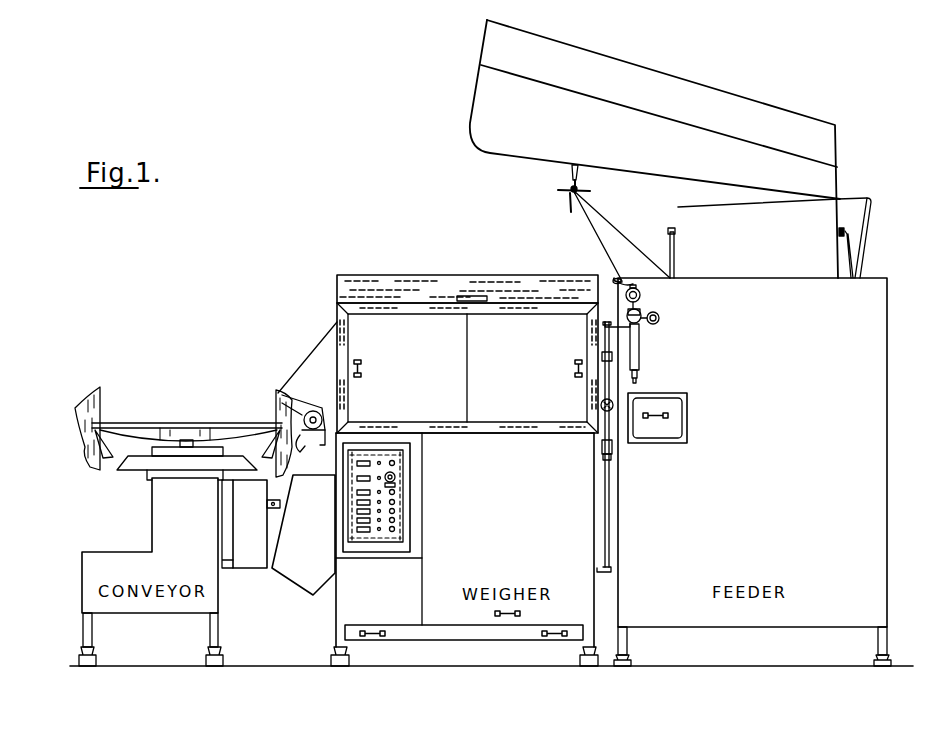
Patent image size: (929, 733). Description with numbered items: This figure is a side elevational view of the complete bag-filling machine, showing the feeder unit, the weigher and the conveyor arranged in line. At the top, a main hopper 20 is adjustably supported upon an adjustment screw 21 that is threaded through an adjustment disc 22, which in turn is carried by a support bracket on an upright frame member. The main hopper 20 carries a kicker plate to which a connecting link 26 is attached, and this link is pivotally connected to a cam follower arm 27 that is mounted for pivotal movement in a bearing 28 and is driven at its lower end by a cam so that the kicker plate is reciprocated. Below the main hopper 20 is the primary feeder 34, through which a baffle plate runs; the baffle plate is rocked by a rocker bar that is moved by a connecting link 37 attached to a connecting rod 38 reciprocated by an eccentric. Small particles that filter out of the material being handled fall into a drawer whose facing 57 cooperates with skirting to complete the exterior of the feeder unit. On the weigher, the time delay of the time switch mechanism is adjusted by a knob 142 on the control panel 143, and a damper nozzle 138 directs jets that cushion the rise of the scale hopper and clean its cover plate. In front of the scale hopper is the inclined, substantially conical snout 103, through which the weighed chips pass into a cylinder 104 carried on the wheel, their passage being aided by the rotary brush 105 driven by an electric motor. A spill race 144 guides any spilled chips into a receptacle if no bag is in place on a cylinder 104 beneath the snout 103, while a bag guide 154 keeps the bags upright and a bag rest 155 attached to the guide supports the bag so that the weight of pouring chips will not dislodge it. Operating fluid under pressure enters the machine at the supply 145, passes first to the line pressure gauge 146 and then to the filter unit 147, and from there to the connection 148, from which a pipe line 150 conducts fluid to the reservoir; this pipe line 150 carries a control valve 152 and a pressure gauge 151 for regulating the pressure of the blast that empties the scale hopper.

The main hopper 20 is at (517, 145).
The adjustment screw 21 is at (582, 189).
The adjustment disc 22 is at (561, 191).
The connecting link 26 is at (852, 200).
The cam follower arm 27 is at (866, 228).
The bearing 28 is at (597, 234).
The primary feeder 34 is at (688, 221).
The connecting link 37 is at (840, 230).
The connecting rod 38 is at (848, 258).
The facing 57 is at (680, 423).
The inclined snout 103 is at (312, 357).
The cylinder 104 is at (97, 412).
The rotary brush 105 is at (326, 399).
The damper nozzle 138 is at (334, 443).
The knob 142 is at (396, 476).
The control panel 143 is at (408, 512).
The spill race 144 is at (291, 571).
The operating fluid supply 145 is at (616, 280).
The line pressure gauge 146 is at (642, 295).
The filter unit 147 is at (641, 345).
The connection 148 is at (603, 357).
The pipe line 150 is at (605, 383).
The pressure gauge 151 is at (602, 446).
The control valve 152 is at (601, 405).
The bag guide 154 is at (258, 537).
The bag rest 155 is at (277, 504).